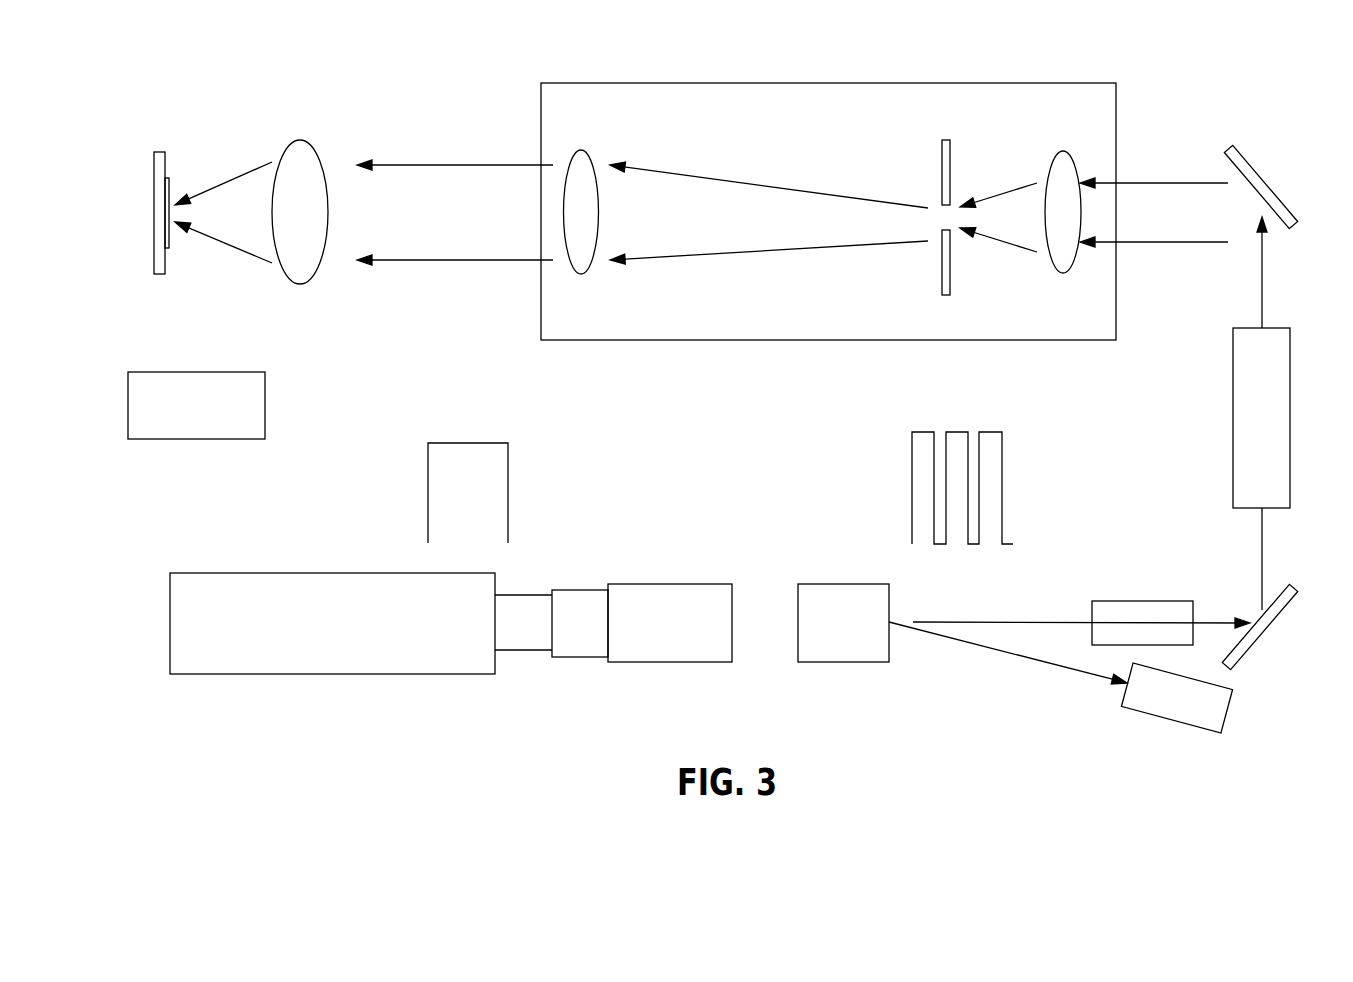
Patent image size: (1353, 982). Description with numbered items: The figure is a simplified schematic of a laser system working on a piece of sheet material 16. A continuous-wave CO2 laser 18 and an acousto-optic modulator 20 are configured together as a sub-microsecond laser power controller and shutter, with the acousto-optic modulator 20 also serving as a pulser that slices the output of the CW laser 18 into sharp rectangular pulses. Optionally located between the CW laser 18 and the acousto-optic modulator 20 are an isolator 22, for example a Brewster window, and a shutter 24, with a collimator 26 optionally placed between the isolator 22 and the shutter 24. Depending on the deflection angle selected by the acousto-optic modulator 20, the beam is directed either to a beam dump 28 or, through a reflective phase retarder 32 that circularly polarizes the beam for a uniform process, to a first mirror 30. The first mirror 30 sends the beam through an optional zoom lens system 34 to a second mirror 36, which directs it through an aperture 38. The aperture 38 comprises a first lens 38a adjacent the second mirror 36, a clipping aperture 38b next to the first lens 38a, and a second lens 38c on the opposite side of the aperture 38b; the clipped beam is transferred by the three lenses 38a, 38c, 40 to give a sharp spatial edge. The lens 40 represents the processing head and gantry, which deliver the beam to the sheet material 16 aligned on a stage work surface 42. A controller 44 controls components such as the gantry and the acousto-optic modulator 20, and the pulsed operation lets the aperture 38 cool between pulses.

The sheet material 16 is at (169, 183).
The CW CO2 laser 18 is at (330, 660).
The acousto-optic modulator 20 is at (843, 648).
The isolator 22 is at (529, 646).
The shutter 24 is at (678, 592).
The collimator 26 is at (577, 600).
The beam dump 28 is at (1167, 707).
The first mirror 30 is at (1268, 630).
The reflective phase retarder 32 is at (1143, 600).
The zoom lens system 34 is at (1233, 417).
The second mirror 36 is at (1265, 180).
The aperture 38 is at (1078, 320).
The first lens 38a is at (1063, 152).
The aperture 38b is at (950, 272).
The second lens 38c is at (573, 155).
The lens 40 is at (307, 268).
The stage work surface 42 is at (154, 205).
The controller 44 is at (265, 405).